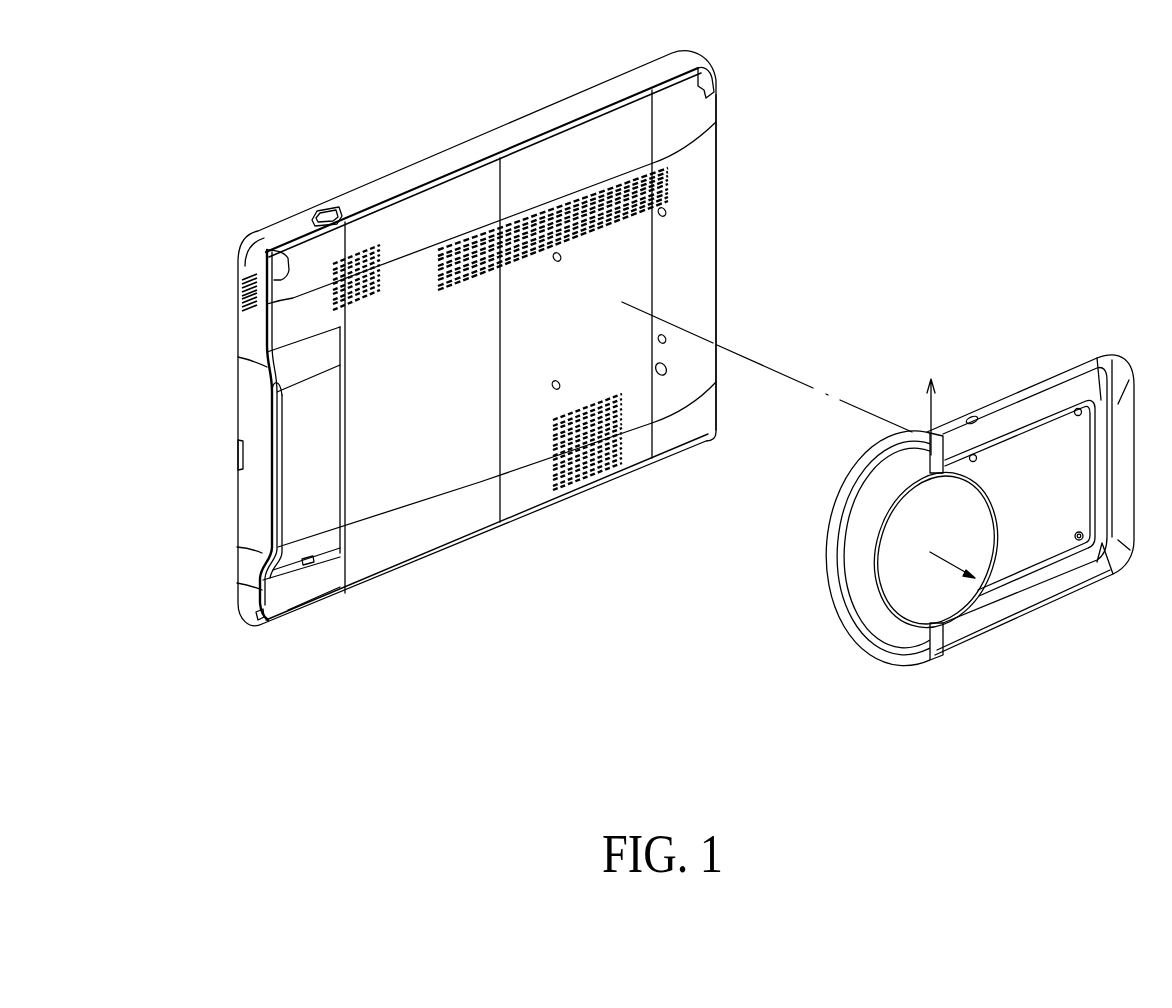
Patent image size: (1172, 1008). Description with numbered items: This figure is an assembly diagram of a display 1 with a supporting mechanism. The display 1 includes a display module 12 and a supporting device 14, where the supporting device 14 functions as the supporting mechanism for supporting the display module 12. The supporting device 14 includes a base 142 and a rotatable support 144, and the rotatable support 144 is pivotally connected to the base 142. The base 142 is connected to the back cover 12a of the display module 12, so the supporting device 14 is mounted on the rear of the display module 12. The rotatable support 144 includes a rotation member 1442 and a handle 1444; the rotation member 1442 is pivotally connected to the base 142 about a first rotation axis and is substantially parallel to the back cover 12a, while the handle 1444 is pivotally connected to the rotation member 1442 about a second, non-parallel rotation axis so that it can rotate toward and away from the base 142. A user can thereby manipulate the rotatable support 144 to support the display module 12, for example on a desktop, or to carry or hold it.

The display 1 is at (685, 403).
The display module 12 is at (560, 338).
The back cover 12a is at (716, 259).
The supporting device 14 is at (975, 494).
The base 142 is at (1022, 455).
The rotatable support 144 is at (975, 555).
The rotation member 1442 is at (922, 607).
The handle 1444 is at (1030, 512).